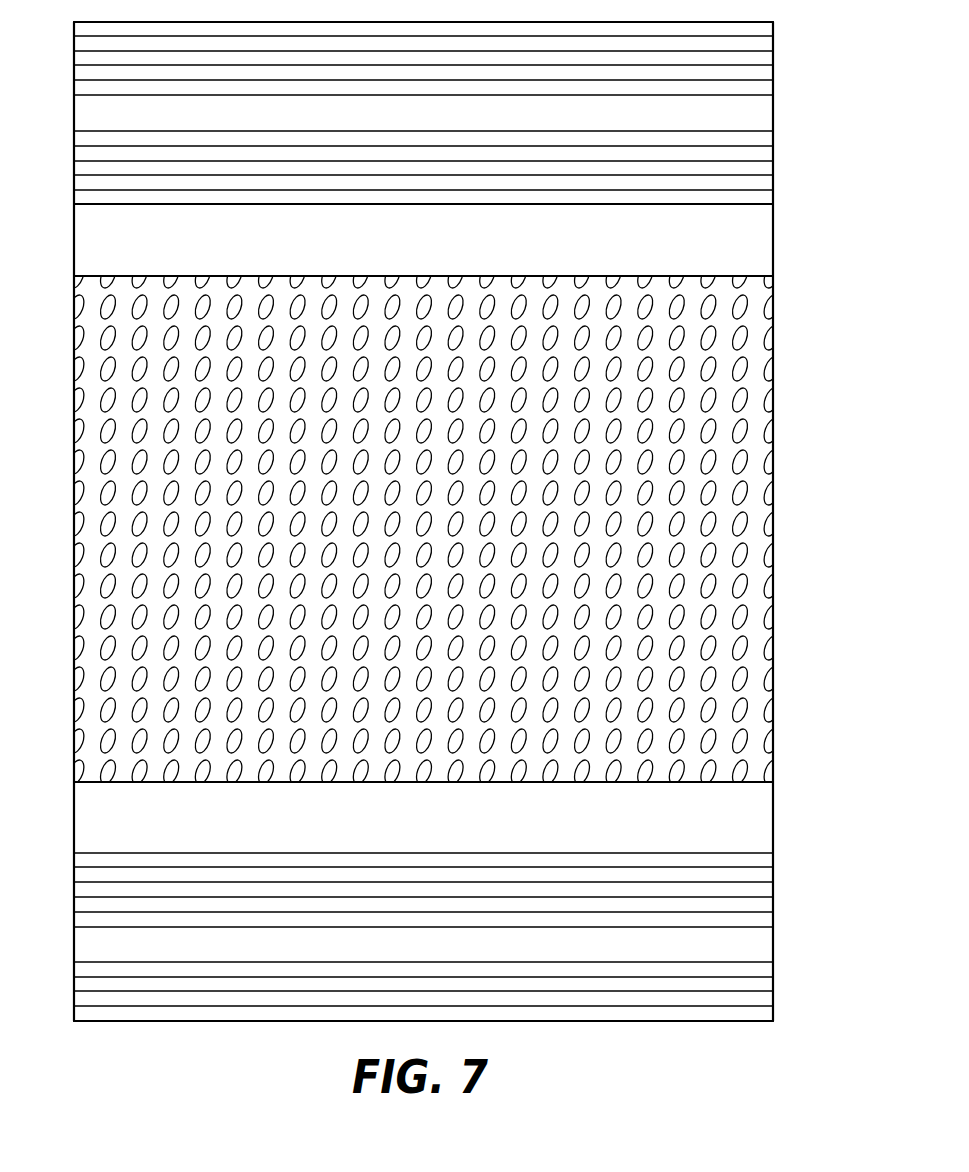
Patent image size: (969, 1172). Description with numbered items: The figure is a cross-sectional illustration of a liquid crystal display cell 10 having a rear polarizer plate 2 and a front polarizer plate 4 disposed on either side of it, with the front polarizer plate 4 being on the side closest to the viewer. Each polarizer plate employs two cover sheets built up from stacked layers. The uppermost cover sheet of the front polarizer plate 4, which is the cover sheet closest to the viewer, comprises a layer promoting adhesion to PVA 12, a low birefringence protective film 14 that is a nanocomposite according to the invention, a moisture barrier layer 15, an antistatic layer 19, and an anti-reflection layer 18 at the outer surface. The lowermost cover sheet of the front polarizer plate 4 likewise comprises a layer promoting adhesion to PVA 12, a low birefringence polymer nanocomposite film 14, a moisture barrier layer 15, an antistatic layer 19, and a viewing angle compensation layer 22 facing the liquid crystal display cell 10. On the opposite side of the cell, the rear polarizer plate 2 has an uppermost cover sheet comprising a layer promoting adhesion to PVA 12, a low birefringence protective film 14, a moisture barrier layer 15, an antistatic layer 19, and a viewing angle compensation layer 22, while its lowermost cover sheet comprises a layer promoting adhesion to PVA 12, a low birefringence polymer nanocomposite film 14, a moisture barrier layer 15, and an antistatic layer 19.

The rear polarizer plate 2 is at (62, 855).
The front polarizer plate 4 is at (63, 22).
The liquid crystal display cell 10 is at (63, 212).
The layer promoting adhesion to PVA 12 is at (773, 81).
The low birefringence protective film 14 is at (773, 66).
The moisture barrier layer 15 is at (773, 52).
The anti-reflection layer 18 is at (773, 23).
The antistatic layer 19 is at (773, 37).
The viewing angle compensation layer 22 is at (773, 194).